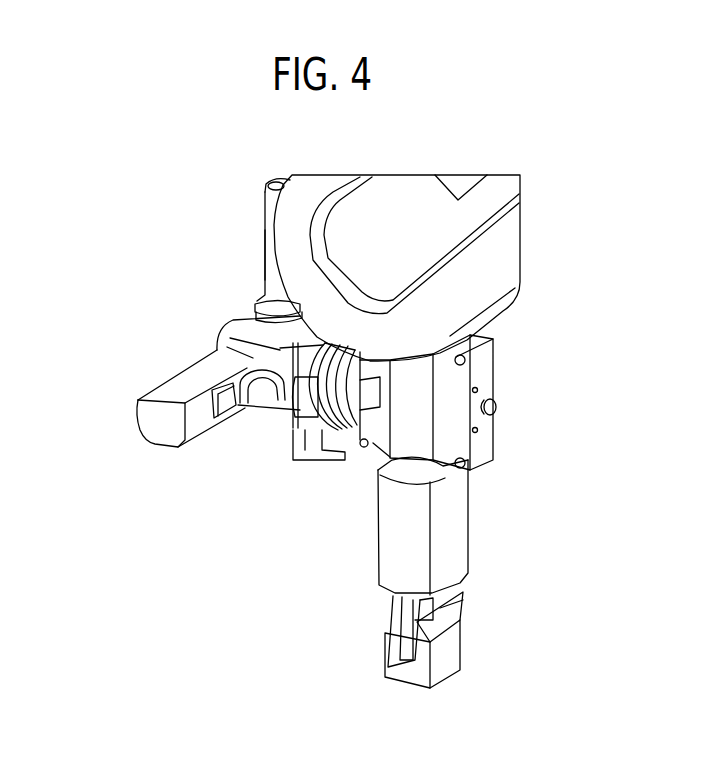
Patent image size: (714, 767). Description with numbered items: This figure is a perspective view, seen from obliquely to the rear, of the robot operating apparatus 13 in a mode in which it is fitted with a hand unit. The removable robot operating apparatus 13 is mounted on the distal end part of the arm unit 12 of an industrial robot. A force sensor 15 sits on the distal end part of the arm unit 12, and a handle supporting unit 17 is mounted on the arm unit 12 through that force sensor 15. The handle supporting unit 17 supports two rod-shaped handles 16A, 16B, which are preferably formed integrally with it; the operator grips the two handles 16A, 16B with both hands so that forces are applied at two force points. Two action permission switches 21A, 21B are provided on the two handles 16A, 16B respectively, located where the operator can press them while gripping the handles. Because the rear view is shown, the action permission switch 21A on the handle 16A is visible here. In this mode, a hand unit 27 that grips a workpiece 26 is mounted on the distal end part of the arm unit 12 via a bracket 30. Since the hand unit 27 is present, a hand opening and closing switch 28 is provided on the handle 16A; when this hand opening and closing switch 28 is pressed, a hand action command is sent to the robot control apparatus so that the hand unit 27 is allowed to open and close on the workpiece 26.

The arm unit 12 is at (487, 265).
The robot operating apparatus 13 is at (147, 458).
The force sensor 15 is at (280, 407).
The handle 16A is at (168, 381).
The handle 16B is at (270, 257).
The handle supporting unit 17 is at (240, 323).
The action permission switch 21A is at (230, 420).
The action permission switch 21B is at (280, 176).
The workpiece 26 is at (465, 660).
The hand unit 27 is at (463, 600).
The hand opening and closing switch 28 is at (273, 417).
The bracket 30 is at (485, 375).